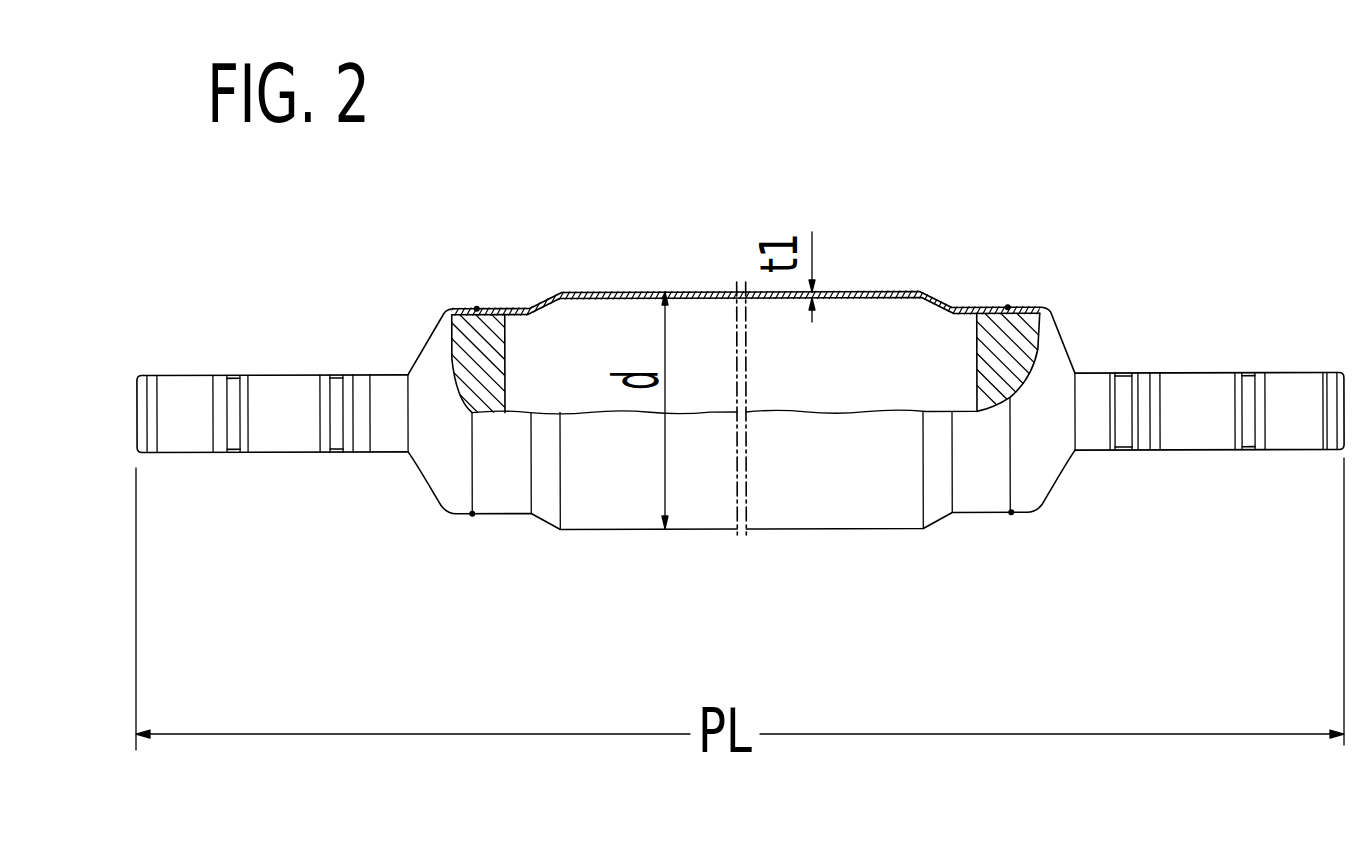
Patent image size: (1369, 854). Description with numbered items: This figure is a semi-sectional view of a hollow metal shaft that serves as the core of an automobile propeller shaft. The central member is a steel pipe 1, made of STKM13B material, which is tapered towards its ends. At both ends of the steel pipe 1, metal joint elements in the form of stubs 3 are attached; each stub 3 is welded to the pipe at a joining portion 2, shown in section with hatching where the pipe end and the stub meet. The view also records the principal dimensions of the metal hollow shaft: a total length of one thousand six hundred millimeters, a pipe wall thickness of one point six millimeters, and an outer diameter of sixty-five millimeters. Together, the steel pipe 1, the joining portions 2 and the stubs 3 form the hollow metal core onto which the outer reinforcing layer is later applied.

The steel pipe 1 is at (612, 293).
The joining portion 2 is at (475, 298).
The stub 3 is at (443, 485).